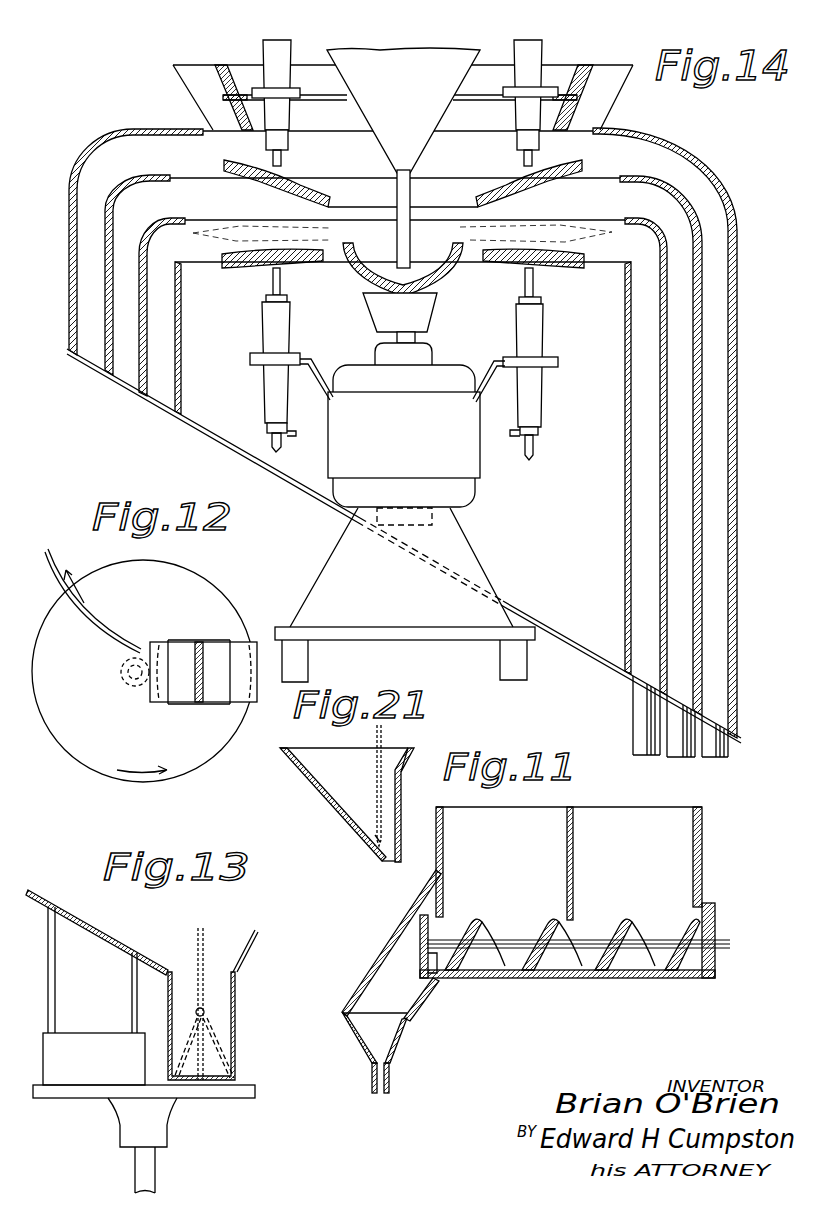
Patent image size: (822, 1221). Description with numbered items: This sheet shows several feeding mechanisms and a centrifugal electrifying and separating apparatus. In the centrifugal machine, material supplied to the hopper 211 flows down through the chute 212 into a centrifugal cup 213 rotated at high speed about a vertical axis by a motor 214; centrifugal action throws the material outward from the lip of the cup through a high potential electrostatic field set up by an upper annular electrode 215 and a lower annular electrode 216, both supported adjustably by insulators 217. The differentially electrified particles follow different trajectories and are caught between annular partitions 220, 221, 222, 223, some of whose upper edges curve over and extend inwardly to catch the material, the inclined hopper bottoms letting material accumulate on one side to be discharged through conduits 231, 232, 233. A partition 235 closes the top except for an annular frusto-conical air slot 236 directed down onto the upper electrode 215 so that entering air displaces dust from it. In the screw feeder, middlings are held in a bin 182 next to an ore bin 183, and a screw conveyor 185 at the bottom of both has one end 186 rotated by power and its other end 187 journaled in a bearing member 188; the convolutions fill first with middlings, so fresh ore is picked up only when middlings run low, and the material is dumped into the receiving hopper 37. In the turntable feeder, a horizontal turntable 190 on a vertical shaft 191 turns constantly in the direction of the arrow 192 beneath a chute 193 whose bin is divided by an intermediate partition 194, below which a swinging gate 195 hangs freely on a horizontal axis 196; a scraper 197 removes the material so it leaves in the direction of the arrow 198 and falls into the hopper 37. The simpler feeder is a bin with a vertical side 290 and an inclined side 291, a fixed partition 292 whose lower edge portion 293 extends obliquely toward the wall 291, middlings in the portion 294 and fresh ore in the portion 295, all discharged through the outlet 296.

In FIG. 14, the hopper 211 is at (403, 110).
In FIG. 14, the chute 212 is at (413, 192).
In FIG. 14, the centrifugal cup 213 is at (444, 243).
In FIG. 14, the motor 214 is at (405, 487).
In FIG. 14, the upper annular electrode 215 is at (403, 183).
In FIG. 14, the lower annular electrode 216 is at (324, 266).
In FIG. 14, the insulators 217 is at (285, 60).
In FIG. 14, the annular partition 220 is at (630, 475).
In FIG. 14, the annular partition 221 is at (660, 518).
In FIG. 14, the annular partition 222 is at (700, 533).
In FIG. 14, the annular partition 223 is at (743, 567).
In FIG. 14, the conduit 231 is at (645, 757).
In FIG. 14, the conduit 232 is at (689, 757).
In FIG. 14, the conduit 233 is at (722, 752).
In FIG. 14, the partition 235 is at (477, 90).
In FIG. 14, the annular frusto-conical air slot 236 is at (200, 78).
In FIG. 12, the turntable 190 is at (220, 738).
In FIG. 13, the turntable 190 is at (239, 1099).
In FIG. 12, the vertical shaft 191 is at (128, 681).
In FIG. 13, the vertical shaft 191 is at (151, 1172).
In FIG. 12, the arrow 192 is at (145, 775).
In FIG. 12, the chute 193 is at (193, 620).
In FIG. 13, the chute 193 is at (237, 1020).
In FIG. 12, the intermediate partition 194 is at (200, 663).
In FIG. 13, the intermediate partition 194 is at (204, 936).
In FIG. 13, the swinging gate 195 is at (210, 1052).
In FIG. 13, the horizontal axis 196 is at (205, 1010).
In FIG. 12, the scraper 197 is at (82, 622).
In FIG. 13, the scraper 197 is at (97, 987).
In FIG. 12, the arrow 198 is at (85, 595).
In FIG. 21, the vertical side 290 is at (399, 806).
In FIG. 21, the inclined side 291 is at (318, 792).
In FIG. 21, the fixed partition 292 is at (382, 735).
In FIG. 21, the lower edge portion 293 is at (374, 838).
In FIG. 21, the bin portion 294 is at (405, 757).
In FIG. 21, the bin portion 295 is at (357, 752).
In FIG. 21, the outlet 296 is at (389, 856).
In FIG. 11, the receiving hopper 37 is at (355, 1040).
In FIG. 11, the middlings bin 182 is at (633, 862).
In FIG. 11, the ore bin 183 is at (505, 862).
In FIG. 11, the screw conveyor 185 is at (595, 922).
In FIG. 11, the screw end 186 is at (732, 935).
In FIG. 11, the screw end 187 is at (422, 944).
In FIG. 11, the bearing member 188 is at (407, 980).